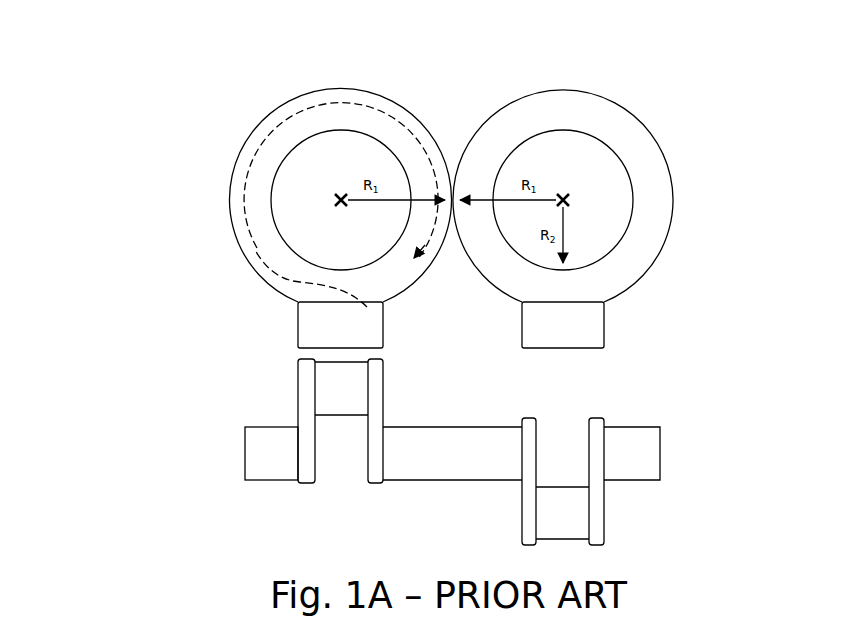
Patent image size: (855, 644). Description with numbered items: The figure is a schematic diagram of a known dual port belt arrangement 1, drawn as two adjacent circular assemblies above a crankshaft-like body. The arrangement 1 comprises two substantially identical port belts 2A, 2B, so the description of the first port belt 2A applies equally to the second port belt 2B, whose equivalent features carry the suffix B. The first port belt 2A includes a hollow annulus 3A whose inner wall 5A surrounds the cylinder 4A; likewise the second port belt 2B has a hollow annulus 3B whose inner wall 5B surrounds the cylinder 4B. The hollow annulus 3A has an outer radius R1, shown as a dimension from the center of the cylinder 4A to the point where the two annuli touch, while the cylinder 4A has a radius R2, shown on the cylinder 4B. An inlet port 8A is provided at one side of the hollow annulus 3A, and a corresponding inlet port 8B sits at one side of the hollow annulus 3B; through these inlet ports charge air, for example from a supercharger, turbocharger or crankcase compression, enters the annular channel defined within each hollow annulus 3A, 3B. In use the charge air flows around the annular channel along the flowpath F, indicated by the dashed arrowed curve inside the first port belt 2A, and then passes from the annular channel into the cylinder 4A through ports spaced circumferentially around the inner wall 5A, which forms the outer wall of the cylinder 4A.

The dual port belt arrangement 1 is at (171, 74).
The first port belt 2A is at (420, 120).
The second port belt 2B is at (633, 112).
The hollow annulus 3A is at (270, 148).
The hollow annulus 3B is at (650, 170).
The cylinder 4A is at (322, 152).
The cylinder 4B is at (563, 160).
The inner wall 5A is at (265, 192).
The inner wall 5B is at (632, 223).
The inlet port 8A is at (298, 325).
The inlet port 8B is at (604, 337).
The flowpath F is at (243, 248).